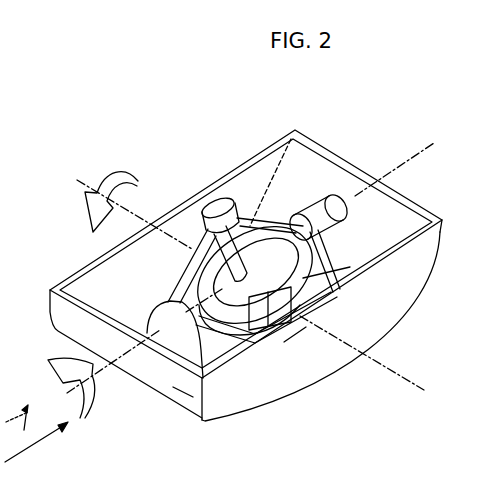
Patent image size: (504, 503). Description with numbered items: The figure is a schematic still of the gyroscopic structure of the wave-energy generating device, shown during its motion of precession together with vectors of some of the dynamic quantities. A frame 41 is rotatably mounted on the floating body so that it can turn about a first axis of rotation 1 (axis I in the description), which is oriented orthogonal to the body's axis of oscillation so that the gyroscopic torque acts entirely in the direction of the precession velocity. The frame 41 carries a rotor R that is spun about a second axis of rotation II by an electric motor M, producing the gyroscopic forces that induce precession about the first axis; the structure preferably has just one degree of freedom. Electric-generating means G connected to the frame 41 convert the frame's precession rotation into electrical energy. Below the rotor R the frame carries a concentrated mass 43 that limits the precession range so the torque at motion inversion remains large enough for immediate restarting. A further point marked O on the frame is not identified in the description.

The first axis of rotation 1 is at (410, 158).
The second axis of rotation II is at (238, 272).
The electric motor M is at (200, 221).
The frame 41 is at (276, 216).
The electric-generating means G is at (346, 224).
The rotor R is at (334, 288).
The concentrated mass 43 is at (223, 372).
The pivot axis O is at (172, 321).